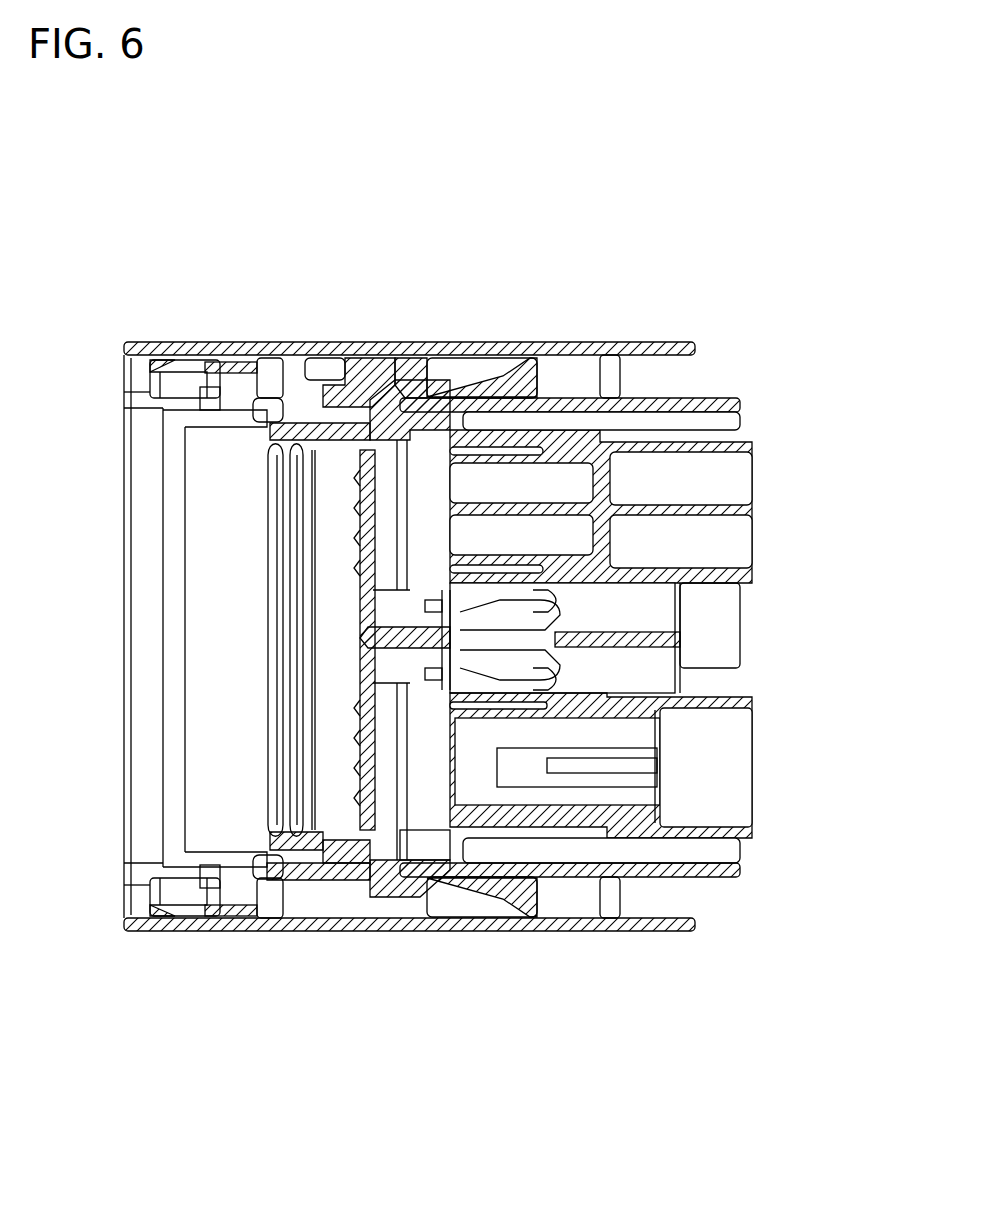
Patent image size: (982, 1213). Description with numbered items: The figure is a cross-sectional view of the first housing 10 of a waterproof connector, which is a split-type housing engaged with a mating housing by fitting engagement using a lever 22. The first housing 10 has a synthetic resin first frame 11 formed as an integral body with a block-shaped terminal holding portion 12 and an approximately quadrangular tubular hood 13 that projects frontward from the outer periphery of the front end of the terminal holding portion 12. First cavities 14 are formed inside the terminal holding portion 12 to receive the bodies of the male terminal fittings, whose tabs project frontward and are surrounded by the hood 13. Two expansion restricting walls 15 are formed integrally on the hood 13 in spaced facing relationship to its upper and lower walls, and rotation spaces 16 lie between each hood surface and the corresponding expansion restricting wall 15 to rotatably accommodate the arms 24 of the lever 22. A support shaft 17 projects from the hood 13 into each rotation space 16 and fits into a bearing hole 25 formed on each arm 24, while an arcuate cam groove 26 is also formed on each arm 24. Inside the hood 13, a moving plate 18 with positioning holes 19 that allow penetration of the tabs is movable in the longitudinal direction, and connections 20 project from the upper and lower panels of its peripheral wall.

The first housing 10 is at (86, 300).
The first frame 11 is at (772, 348).
The terminal holding portion 12 is at (718, 398).
The hood 13 is at (348, 360).
The first cavity 14 is at (655, 630).
The expansion restricting wall 15 is at (571, 342).
The rotation space 16 is at (603, 350).
The support shaft 17 is at (392, 356).
The moving plate 18 is at (367, 705).
The positioning hole 19 is at (367, 785).
The connection 20 is at (229, 370).
The lever 22 is at (460, 362).
The arm 24 is at (520, 360).
The bearing hole 25 is at (402, 356).
The cam groove 26 is at (268, 418).